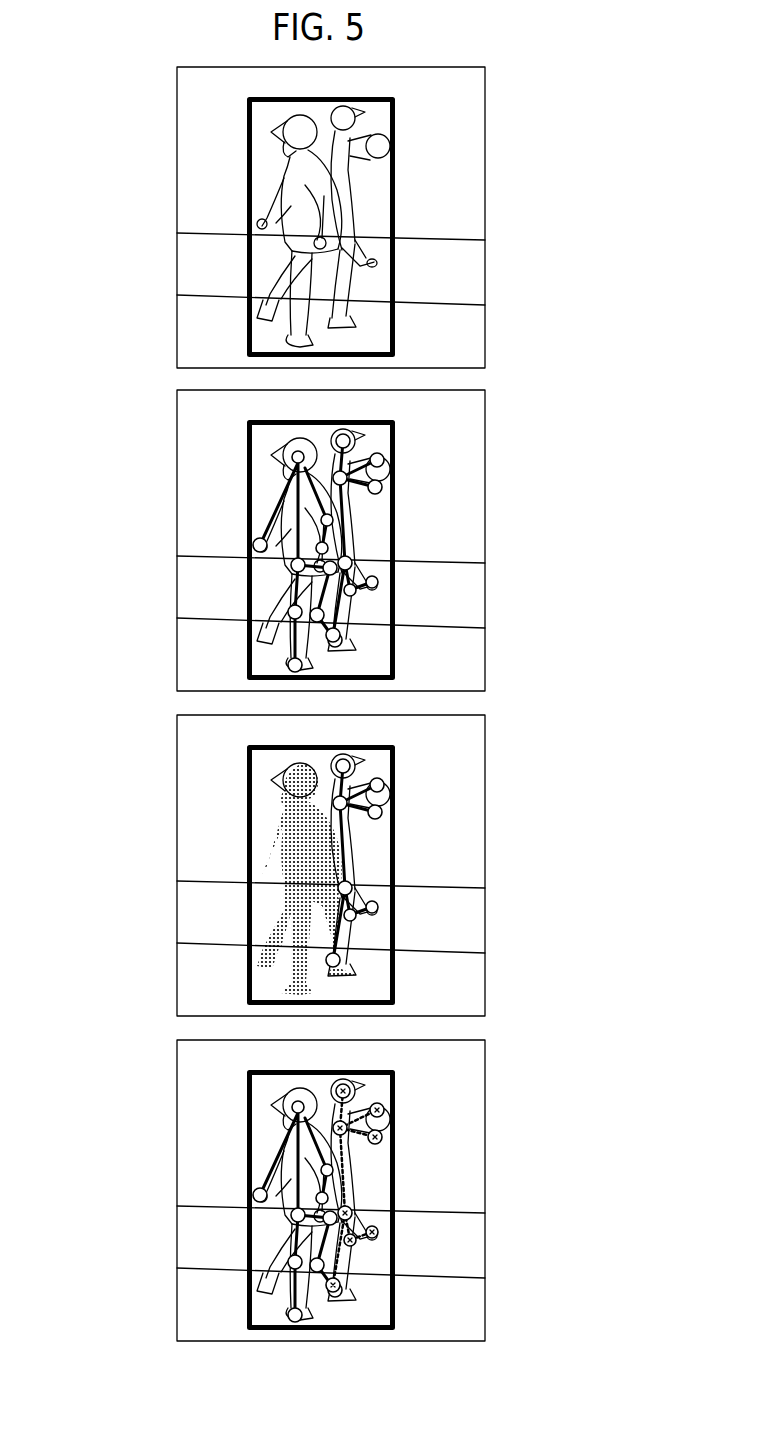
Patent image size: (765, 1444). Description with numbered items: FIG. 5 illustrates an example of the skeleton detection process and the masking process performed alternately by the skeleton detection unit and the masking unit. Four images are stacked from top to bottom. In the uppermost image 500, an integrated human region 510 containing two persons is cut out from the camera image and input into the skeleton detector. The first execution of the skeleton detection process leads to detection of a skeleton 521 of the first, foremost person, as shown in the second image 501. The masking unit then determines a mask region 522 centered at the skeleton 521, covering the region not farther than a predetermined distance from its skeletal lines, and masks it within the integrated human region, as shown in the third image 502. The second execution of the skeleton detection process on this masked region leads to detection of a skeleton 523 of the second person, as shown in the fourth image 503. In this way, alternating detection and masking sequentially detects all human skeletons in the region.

The uppermost image 500 is at (414, 217).
The second image 501 is at (414, 540).
The third image 502 is at (414, 865).
The fourth image 503 is at (414, 1190).
The integrated human region 510 is at (395, 208).
The skeleton 521 is at (297, 583).
The mask region 522 is at (292, 915).
The skeleton 523 is at (395, 1160).